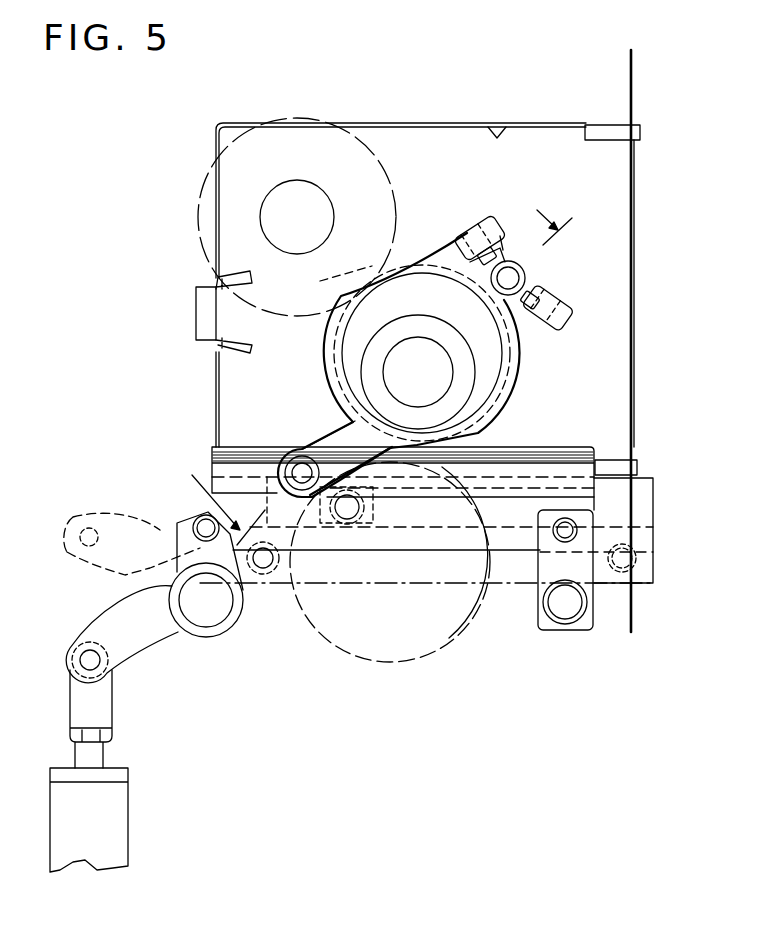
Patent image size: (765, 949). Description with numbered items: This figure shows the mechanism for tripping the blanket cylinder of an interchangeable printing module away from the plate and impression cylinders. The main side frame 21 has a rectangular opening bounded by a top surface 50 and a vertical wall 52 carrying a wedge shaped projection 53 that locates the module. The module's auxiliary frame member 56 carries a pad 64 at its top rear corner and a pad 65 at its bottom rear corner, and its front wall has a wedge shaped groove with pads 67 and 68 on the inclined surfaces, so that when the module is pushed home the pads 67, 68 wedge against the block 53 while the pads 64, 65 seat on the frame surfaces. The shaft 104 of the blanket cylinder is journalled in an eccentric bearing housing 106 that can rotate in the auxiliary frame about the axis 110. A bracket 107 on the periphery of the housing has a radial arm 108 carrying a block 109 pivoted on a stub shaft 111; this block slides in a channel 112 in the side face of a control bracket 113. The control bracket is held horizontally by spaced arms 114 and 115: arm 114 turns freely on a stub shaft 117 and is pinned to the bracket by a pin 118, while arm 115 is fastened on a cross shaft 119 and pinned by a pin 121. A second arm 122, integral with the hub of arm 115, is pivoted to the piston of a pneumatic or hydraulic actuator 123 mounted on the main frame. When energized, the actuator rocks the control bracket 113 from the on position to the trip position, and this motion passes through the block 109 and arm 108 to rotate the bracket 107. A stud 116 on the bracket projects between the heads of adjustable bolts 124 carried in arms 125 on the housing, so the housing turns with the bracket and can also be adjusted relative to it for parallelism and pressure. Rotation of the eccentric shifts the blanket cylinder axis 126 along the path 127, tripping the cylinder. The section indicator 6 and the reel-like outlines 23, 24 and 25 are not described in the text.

The section line 6 is at (374, 369).
The main side frame 21 is at (620, 90).
The supply reel 23 is at (355, 158).
The tape 24 is at (334, 336).
The take-up reel 25 is at (396, 647).
The top surface 50 is at (498, 133).
The vertical wall 52 is at (237, 182).
The wedge shaped projection 53 is at (210, 320).
The auxiliary frame member 56 is at (622, 223).
The pad 64 is at (636, 133).
The pad 65 is at (612, 465).
The pad 67 is at (220, 282).
The pad 68 is at (222, 345).
The shaft 104 is at (444, 386).
The eccentric bearing housing 106 is at (414, 290).
The bracket 107 is at (517, 367).
The arm 108 is at (318, 428).
The block 109 is at (292, 462).
The axis 110 is at (425, 358).
The stub shaft 111 is at (301, 458).
The channel 112 is at (526, 466).
The control bracket 113 is at (477, 605).
The arm 114 is at (550, 575).
The arm 115 is at (200, 548).
The stud 116 is at (521, 272).
The stub shaft 117 is at (575, 604).
The pin 118 is at (578, 527).
The cross shaft 119 is at (216, 612).
The pin 121 is at (195, 520).
The second arm 122 is at (148, 628).
The actuator 123 is at (112, 815).
The bolt 124 is at (506, 232).
The arm 125 is at (483, 230).
The axis 126 is at (418, 371).
The path 127 is at (428, 369).